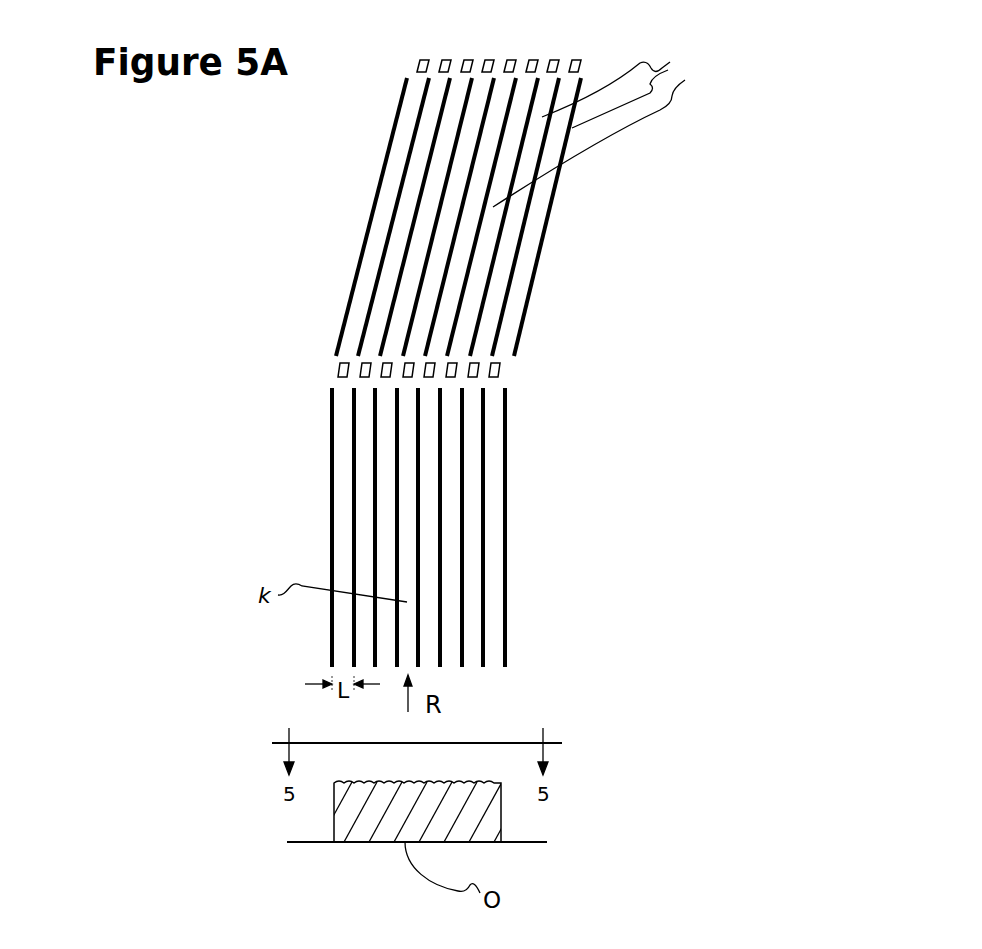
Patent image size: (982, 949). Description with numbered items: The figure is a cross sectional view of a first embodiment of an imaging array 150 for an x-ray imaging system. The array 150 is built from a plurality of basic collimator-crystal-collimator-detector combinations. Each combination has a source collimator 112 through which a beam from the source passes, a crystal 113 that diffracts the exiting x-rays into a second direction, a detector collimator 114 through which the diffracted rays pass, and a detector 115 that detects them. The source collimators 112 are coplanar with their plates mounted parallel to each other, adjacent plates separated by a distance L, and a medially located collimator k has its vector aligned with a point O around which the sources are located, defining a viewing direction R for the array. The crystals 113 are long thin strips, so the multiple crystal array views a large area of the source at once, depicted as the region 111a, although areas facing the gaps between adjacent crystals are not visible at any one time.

The detector 115 is at (576, 60).
The detector collimator 114 is at (604, 128).
The imaging array 150 is at (537, 263).
The crystal 113 is at (502, 370).
The source collimator 112 is at (468, 660).
The actual source region 111a is at (501, 822).